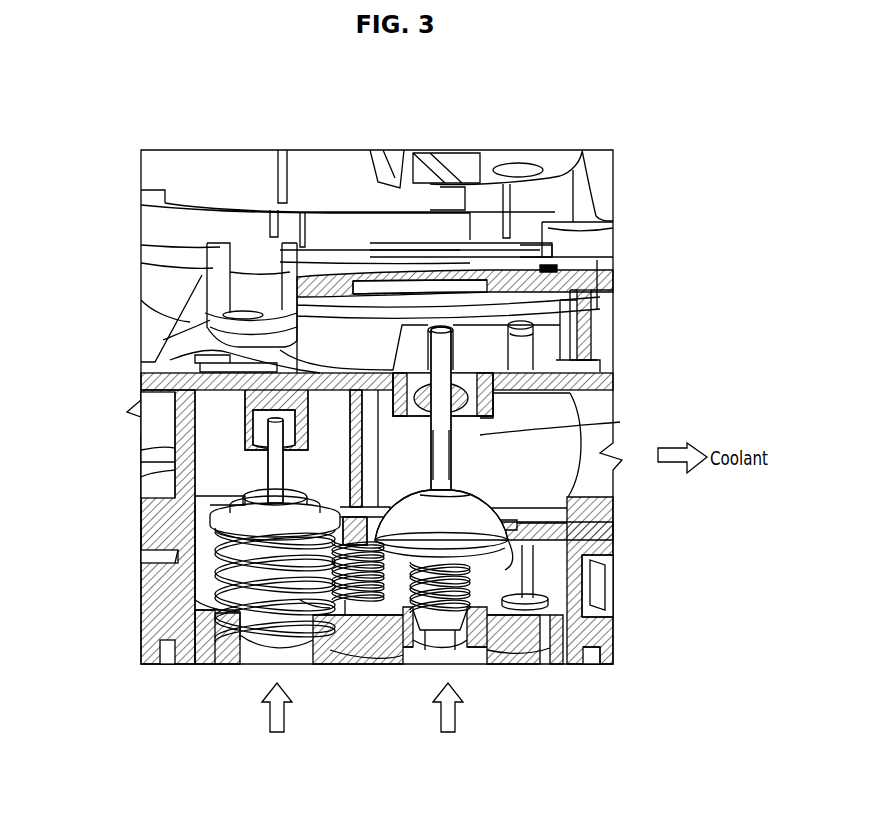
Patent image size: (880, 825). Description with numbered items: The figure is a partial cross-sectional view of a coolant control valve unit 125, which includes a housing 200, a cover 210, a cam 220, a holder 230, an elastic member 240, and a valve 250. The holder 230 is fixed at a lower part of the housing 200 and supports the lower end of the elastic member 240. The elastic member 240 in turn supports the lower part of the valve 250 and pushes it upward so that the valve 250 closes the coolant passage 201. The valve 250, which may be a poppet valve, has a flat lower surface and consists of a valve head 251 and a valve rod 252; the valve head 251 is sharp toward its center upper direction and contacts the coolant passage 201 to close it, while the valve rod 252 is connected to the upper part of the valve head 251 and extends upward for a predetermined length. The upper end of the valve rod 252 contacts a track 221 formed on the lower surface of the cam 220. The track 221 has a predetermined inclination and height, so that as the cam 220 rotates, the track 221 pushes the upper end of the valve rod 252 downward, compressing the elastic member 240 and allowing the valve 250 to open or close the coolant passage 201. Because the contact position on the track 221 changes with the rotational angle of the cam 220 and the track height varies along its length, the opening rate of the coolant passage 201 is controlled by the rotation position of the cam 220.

The coolant control valve unit 125 is at (118, 535).
The housing 200 is at (178, 446).
The coolant passage 201 is at (560, 555).
The cover 210 is at (485, 183).
The cam 220 is at (350, 348).
The track 221 is at (577, 328).
The holder 230 is at (375, 655).
The elastic member 240 is at (480, 603).
The valve 250 is at (510, 515).
The valve head 251 is at (467, 513).
The valve rod 252 is at (440, 423).